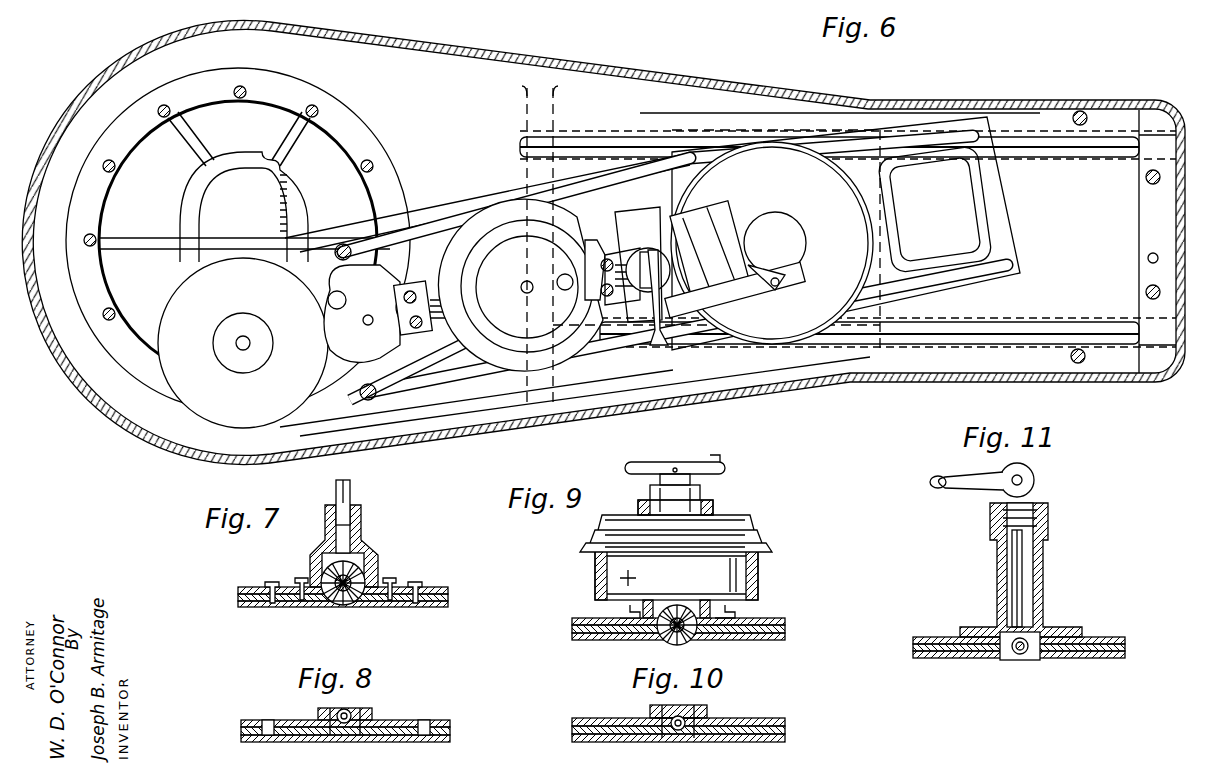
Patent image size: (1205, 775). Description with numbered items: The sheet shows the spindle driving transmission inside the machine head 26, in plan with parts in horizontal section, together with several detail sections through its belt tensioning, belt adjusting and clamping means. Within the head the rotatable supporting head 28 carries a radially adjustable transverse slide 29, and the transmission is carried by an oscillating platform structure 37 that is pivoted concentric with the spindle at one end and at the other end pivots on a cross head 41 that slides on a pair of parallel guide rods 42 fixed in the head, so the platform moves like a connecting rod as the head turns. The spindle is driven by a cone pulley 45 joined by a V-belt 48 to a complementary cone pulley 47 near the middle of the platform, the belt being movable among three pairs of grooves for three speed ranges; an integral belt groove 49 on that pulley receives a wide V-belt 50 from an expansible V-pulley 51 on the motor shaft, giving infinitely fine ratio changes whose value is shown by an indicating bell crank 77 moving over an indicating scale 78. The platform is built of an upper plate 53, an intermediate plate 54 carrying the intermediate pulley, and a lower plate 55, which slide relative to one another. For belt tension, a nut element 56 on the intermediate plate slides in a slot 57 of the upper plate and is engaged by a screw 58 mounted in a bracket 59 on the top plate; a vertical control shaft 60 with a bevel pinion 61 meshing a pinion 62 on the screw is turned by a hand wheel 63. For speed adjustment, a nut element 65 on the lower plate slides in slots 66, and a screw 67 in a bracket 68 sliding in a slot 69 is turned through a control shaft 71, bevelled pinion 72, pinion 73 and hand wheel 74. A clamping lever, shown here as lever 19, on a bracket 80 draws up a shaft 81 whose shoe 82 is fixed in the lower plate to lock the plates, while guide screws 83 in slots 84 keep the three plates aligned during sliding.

In FIG. 6, the lever 19 is at (660, 330).
In FIG. 11, the lever 19 is at (938, 490).
In FIG. 6, the machine head 26 is at (925, 100).
In FIG. 6, the rotatable supporting head 28 is at (270, 110).
In FIG. 6, the transverse slide 29 is at (210, 244).
In FIG. 6, the oscillating platform structure 37 is at (455, 165).
In FIG. 6, the cross head 41 is at (840, 356).
In FIG. 6, the guide rods 42 is at (1100, 148).
In FIG. 6, the cone pulley 45 is at (215, 408).
In FIG. 6, the complementary cone pulley 47 is at (590, 248).
In FIG. 9, the complementary cone pulley 47 is at (750, 530).
In FIG. 6, the V-belt 48 is at (413, 363).
In FIG. 9, the V-belt 48 is at (715, 505).
In FIG. 9, the belt groove 49 is at (639, 579).
In FIG. 6, the V-belt 50 is at (585, 208).
In FIG. 9, the V-belt 50 is at (760, 580).
In FIG. 6, the expansible V-pulley 51 is at (870, 213).
In FIG. 6, the upper plate 53 is at (1010, 222).
In FIG. 7, the upper plate 53 is at (430, 585).
In FIG. 8, the upper plate 53 is at (430, 720).
In FIG. 9, the upper plate 53 is at (770, 618).
In FIG. 10, the upper plate 53 is at (770, 718).
In FIG. 11, the upper plate 53 is at (1082, 637).
In FIG. 6, the intermediate plate 54 is at (950, 227).
In FIG. 7, the intermediate plate 54 is at (450, 595).
In FIG. 8, the intermediate plate 54 is at (450, 728).
In FIG. 9, the intermediate plate 54 is at (786, 628).
In FIG. 10, the intermediate plate 54 is at (786, 727).
In FIG. 11, the intermediate plate 54 is at (1126, 648).
In FIG. 6, the lower plate 55 is at (865, 183).
In FIG. 7, the lower plate 55 is at (448, 605).
In FIG. 8, the lower plate 55 is at (450, 740).
In FIG. 9, the lower plate 55 is at (785, 638).
In FIG. 10, the lower plate 55 is at (785, 738).
In FIG. 11, the lower plate 55 is at (1125, 658).
In FIG. 6, the nut element 56 is at (438, 292).
In FIG. 8, the nut element 56 is at (340, 708).
In FIG. 8, the slot 57 is at (372, 712).
In FIG. 6, the screw 58 is at (349, 295).
In FIG. 7, the screw 58 is at (335, 600).
In FIG. 8, the screw 58 is at (340, 735).
In FIG. 7, the bracket 59 is at (365, 535).
In FIG. 6, the control shaft 60 is at (368, 325).
In FIG. 7, the control shaft 60 is at (350, 486).
In FIG. 7, the bevel pinion 61 is at (378, 560).
In FIG. 7, the pinion 62 is at (345, 600).
In FIG. 6, the hand wheel 63 is at (340, 330).
In FIG. 6, the nut element 65 is at (614, 270).
In FIG. 10, the nut element 65 is at (650, 708).
In FIG. 10, the slots 66 is at (700, 716).
In FIG. 6, the screw 67 is at (628, 262).
In FIG. 9, the screw 67 is at (668, 640).
In FIG. 10, the screw 67 is at (678, 732).
In FIG. 9, the bracket 68 is at (643, 606).
In FIG. 9, the slot 69 is at (622, 618).
In FIG. 6, the control shaft 71 is at (520, 290).
In FIG. 9, the bevelled pinion 72 is at (710, 606).
In FIG. 9, the pinion 73 is at (690, 640).
In FIG. 6, the hand wheel 74 is at (512, 248).
In FIG. 9, the hand wheel 74 is at (725, 472).
In FIG. 6, the indicating bell crank 77 is at (748, 310).
In FIG. 6, the indicating scale 78 is at (790, 292).
In FIG. 6, the bracket 80 is at (664, 212).
In FIG. 11, the bracket 80 is at (1048, 531).
In FIG. 6, the shaft 81 is at (645, 290).
In FIG. 11, the shaft 81 is at (1030, 565).
In FIG. 11, the shoe 82 is at (1010, 660).
In FIG. 6, the guide screws 83 is at (355, 238).
In FIG. 7, the guide screws 83 is at (275, 578).
In FIG. 7, the slots 84 is at (265, 582).
In FIG. 8, the slots 84 is at (270, 720).